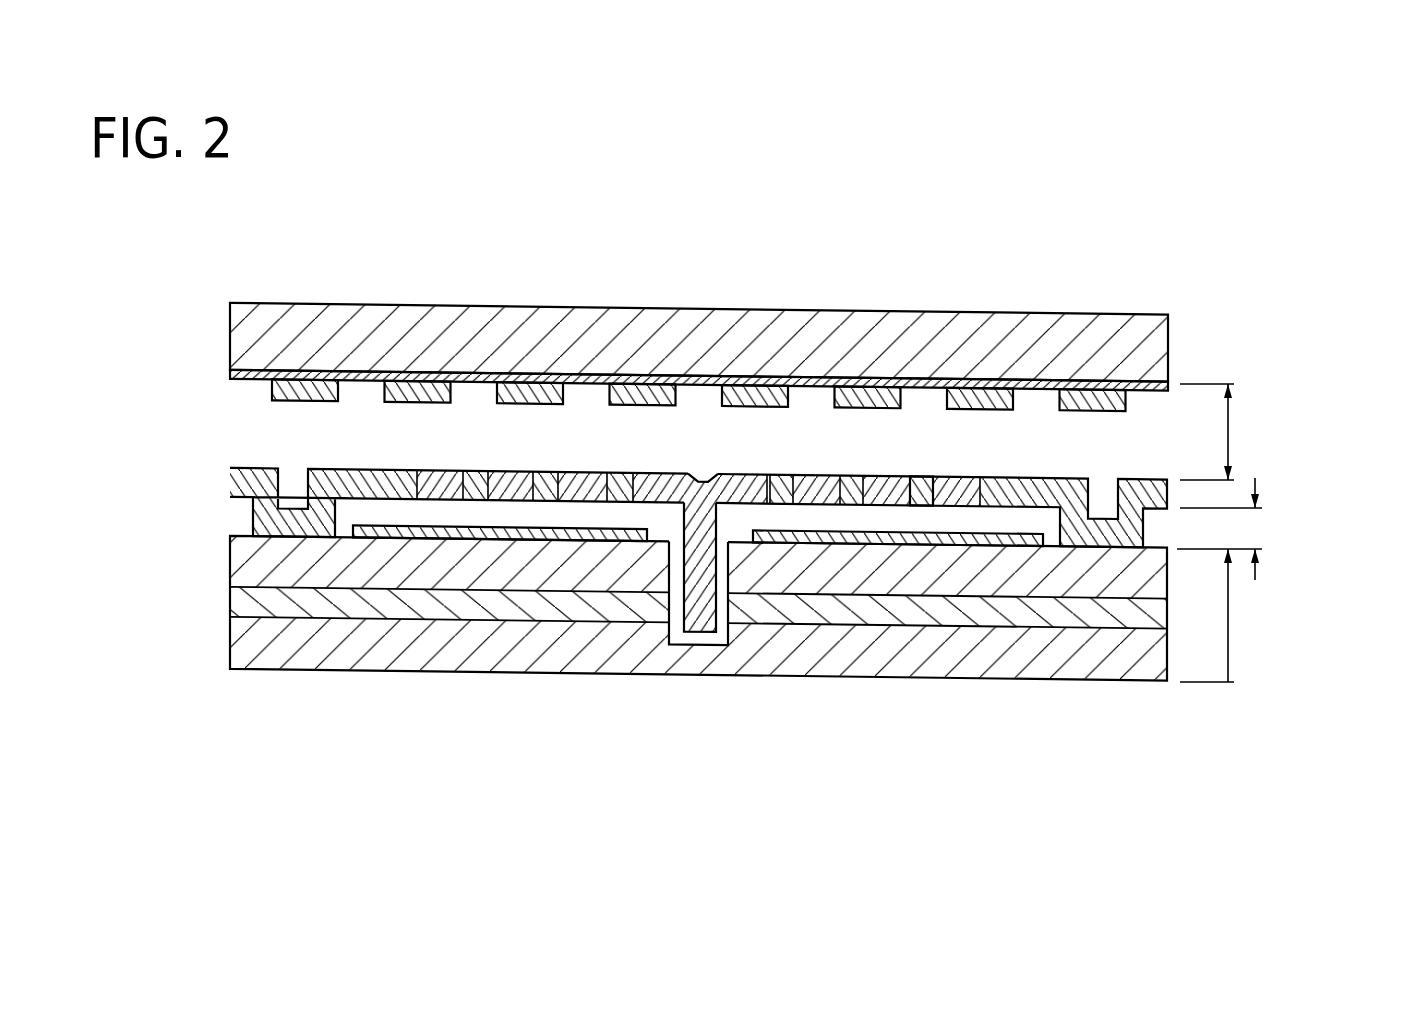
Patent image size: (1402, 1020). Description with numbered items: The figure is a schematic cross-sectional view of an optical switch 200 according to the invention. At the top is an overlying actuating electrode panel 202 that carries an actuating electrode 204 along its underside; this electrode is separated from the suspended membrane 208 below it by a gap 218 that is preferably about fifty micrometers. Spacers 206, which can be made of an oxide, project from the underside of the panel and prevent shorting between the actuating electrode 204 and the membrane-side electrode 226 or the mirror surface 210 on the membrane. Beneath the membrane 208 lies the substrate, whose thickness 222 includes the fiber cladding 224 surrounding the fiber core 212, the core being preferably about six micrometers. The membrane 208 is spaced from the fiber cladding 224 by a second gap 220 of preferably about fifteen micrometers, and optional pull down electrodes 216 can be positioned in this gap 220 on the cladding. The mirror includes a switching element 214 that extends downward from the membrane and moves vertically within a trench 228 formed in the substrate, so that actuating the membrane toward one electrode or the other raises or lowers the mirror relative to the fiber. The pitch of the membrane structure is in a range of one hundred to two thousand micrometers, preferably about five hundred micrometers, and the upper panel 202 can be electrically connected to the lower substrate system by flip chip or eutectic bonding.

The optical switch 200 is at (1038, 270).
The actuating electrode panel 202 is at (1170, 331).
The actuating electrode 204 is at (761, 378).
The spacers 206 is at (522, 390).
The suspended membrane 208 is at (682, 578).
The mirror surface 210 is at (720, 468).
The fiber core 212 is at (468, 607).
The switching element 214 is at (676, 624).
The pull down electrodes 216 is at (833, 538).
The gap 218 is at (1232, 431).
The gap 220 is at (1258, 533).
The substrate thickness 222 is at (1232, 641).
The fiber cladding 224 is at (262, 566).
The electrode 226 is at (913, 488).
The trench 228 is at (720, 637).